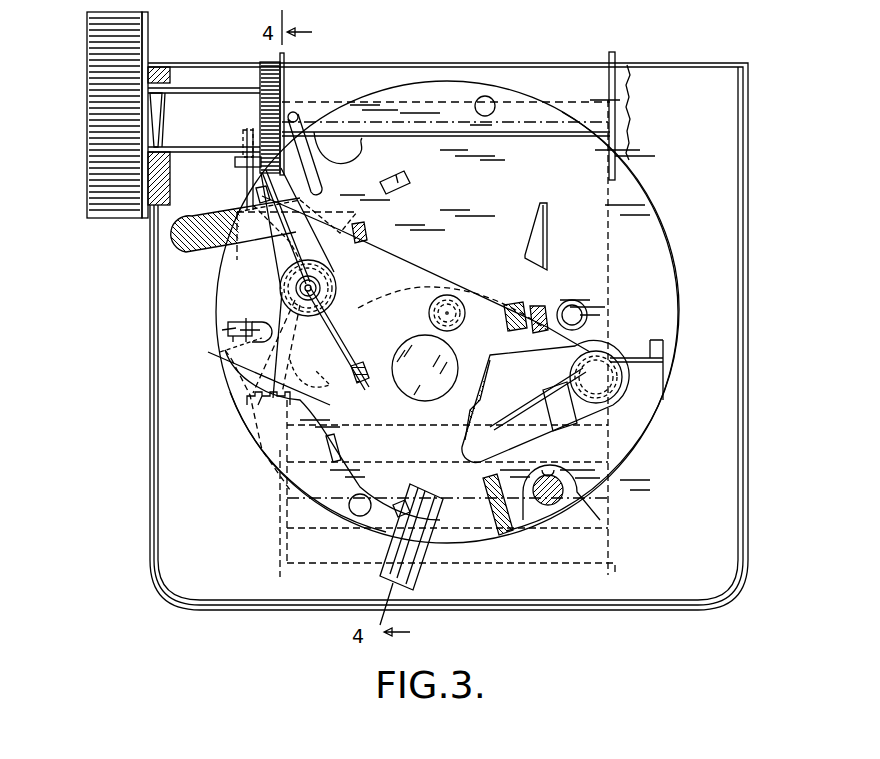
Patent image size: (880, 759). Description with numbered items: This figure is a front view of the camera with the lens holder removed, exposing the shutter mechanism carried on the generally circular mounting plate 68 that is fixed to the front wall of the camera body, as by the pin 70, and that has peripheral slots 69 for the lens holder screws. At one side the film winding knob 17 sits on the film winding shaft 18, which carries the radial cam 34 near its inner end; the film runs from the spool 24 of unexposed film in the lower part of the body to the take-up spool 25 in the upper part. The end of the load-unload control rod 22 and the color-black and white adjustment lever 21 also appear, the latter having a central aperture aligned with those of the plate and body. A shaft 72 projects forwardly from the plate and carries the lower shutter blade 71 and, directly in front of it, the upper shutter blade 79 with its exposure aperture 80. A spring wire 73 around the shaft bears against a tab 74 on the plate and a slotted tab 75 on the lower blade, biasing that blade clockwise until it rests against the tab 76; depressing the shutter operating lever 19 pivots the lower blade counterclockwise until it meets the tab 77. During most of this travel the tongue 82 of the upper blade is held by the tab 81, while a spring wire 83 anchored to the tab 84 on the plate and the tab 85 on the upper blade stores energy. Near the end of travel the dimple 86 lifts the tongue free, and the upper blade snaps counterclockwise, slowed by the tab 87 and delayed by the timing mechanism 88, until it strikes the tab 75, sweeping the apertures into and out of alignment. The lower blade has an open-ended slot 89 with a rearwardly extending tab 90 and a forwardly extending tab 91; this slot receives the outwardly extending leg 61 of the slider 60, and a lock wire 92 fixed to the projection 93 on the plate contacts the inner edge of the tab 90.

The film winding knob 17 is at (87, 98).
The film winding shaft 18 is at (189, 100).
The shutter operating lever 19 is at (178, 242).
The color-black and white adjustment lever 21 is at (410, 574).
The load-unload control rod 22 is at (297, 114).
The spool of unexposed film 24 is at (618, 568).
The take-up spool 25 is at (284, 80).
The radial cam 34 is at (247, 150).
The slider 60 is at (240, 186).
The outwardly extending leg 61 is at (230, 334).
The mounting plate 68 is at (540, 120).
The slots 69 is at (362, 146).
The pin 70 is at (485, 96).
The lower shutter blade 71 is at (362, 478).
The shaft 72 is at (337, 297).
The spring wire 73 is at (363, 240).
The forwardly extending tab 74 is at (258, 194).
The tab 75 is at (366, 246).
The tab 76 is at (338, 480).
The tab 77 is at (402, 184).
The upper shutter blade 79 is at (360, 405).
The exposure aperture 80 is at (396, 386).
The tab 81 is at (533, 318).
The tongue 82 is at (590, 350).
The spring wire 83 is at (341, 343).
The tab 84 is at (250, 405).
The tab 85 is at (362, 370).
The dimple 86 is at (396, 512).
The forwardly extending tab 87 is at (548, 216).
The mechanism 88 is at (510, 455).
The open-ended slot 89 is at (243, 325).
The rearwardly extending tab 90 is at (221, 352).
The forwardly extending tab 91 is at (246, 343).
The lock wire 92 is at (228, 372).
The projection 93 is at (303, 236).